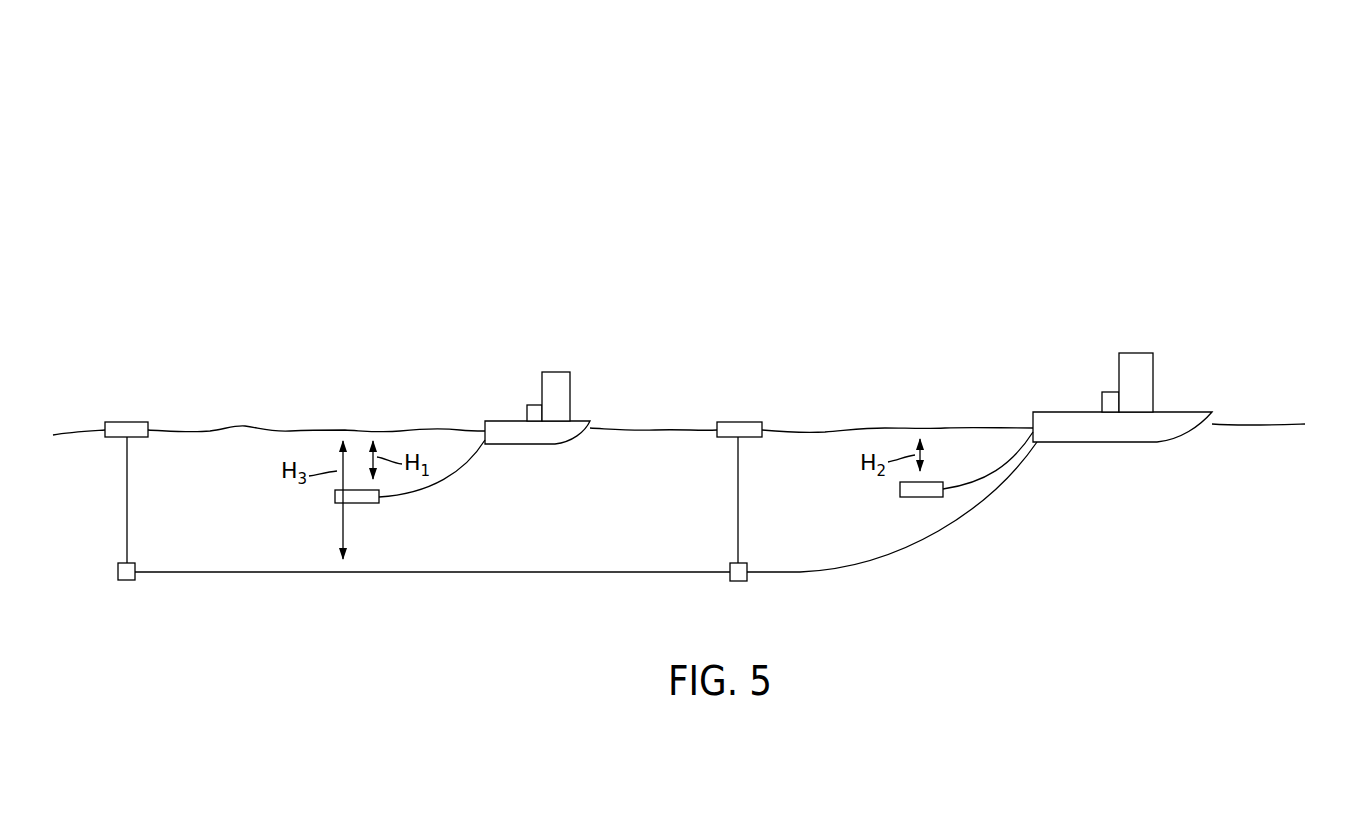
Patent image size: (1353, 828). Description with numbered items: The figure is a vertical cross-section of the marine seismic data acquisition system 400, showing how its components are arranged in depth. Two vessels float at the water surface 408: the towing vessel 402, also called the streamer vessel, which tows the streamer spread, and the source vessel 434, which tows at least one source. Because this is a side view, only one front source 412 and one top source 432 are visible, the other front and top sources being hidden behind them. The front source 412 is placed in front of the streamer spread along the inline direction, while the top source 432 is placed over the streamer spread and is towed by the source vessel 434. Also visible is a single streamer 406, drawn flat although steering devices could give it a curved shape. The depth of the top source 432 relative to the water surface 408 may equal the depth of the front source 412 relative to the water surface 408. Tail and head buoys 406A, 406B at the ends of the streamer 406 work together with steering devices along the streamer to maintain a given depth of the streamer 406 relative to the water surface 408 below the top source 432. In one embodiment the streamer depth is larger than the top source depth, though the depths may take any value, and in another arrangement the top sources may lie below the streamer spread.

The marine seismic data acquisition system 400 is at (1240, 79).
The towing vessel 402 is at (1176, 353).
The streamer 406 is at (567, 574).
The tail buoy 406A is at (127, 421).
The head buoy 406B is at (738, 421).
The water surface 408 is at (245, 428).
The front source 412 is at (936, 481).
The top source 432 is at (357, 497).
The source vessel 434 is at (512, 405).